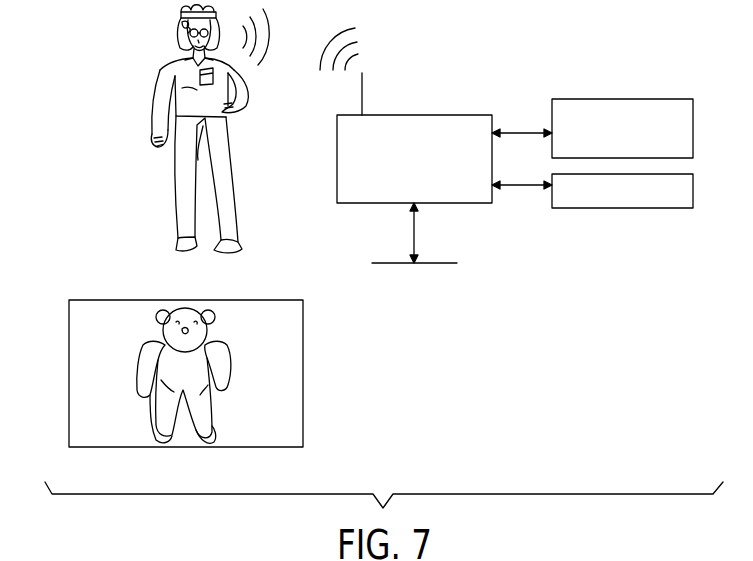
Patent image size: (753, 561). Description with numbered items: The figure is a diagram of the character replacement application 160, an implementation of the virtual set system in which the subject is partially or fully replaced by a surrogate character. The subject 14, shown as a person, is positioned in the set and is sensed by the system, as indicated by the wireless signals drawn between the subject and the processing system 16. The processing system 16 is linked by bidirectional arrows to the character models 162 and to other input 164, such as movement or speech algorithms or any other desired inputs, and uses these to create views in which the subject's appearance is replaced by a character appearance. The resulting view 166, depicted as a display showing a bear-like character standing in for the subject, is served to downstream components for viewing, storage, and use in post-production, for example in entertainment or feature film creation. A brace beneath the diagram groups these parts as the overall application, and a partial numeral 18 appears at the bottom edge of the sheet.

The character replacement application 160 is at (80, 95).
The subject 14 is at (175, 196).
The processing system 16 is at (415, 115).
The character models 162 is at (625, 99).
The other input 164 is at (620, 208).
The resulting view 166 is at (303, 373).
The sheet numeral 18 is at (600, 556).